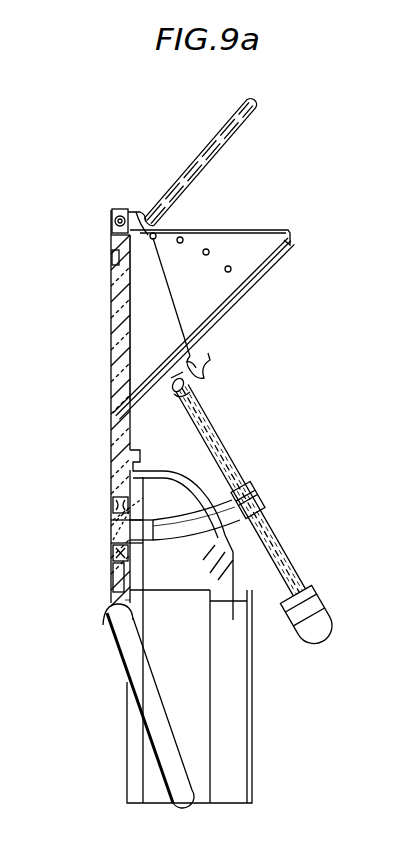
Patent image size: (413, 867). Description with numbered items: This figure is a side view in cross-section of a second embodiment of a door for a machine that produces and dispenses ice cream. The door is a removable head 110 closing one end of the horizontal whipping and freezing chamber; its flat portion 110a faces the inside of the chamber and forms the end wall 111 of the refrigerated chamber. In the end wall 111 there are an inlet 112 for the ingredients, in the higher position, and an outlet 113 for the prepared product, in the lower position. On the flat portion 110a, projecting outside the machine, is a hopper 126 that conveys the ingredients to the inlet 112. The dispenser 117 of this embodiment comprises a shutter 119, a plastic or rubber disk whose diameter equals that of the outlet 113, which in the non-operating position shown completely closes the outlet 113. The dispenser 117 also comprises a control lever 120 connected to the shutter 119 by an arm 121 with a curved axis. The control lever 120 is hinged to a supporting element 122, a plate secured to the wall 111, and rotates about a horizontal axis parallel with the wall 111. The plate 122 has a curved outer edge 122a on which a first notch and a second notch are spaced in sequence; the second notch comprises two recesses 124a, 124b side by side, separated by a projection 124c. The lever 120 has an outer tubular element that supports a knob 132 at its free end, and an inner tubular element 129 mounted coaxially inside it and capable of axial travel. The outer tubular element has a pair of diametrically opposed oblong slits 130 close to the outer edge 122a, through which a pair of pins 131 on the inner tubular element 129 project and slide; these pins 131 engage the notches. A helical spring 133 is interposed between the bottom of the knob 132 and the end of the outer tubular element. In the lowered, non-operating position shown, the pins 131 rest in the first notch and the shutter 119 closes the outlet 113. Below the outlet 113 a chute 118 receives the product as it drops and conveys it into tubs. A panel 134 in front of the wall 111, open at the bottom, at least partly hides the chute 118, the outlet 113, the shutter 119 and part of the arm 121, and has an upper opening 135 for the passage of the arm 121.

The removable head 110 is at (111, 290).
The flat portion 110a is at (111, 470).
The end wall 111 is at (118, 248).
The inlet 112 is at (118, 378).
The outlet 113 is at (110, 499).
The dispenser 117 is at (288, 443).
The chute 118 is at (140, 785).
The shutter 119 is at (110, 552).
The control lever 120 is at (267, 540).
The arm 121 is at (240, 495).
The supporting element 122 is at (208, 353).
The curved outer edge 122a is at (266, 302).
The recess 124a is at (197, 370).
The recess 124b is at (200, 359).
The projection 124c is at (153, 233).
The hopper 126 is at (267, 243).
The inner tubular element 129 is at (290, 556).
The oblong slits 130 is at (172, 392).
The pins 131 is at (210, 373).
The knob 132 is at (323, 623).
The helical spring 133 is at (313, 588).
The panel 134 is at (247, 731).
The upper opening 135 is at (232, 542).